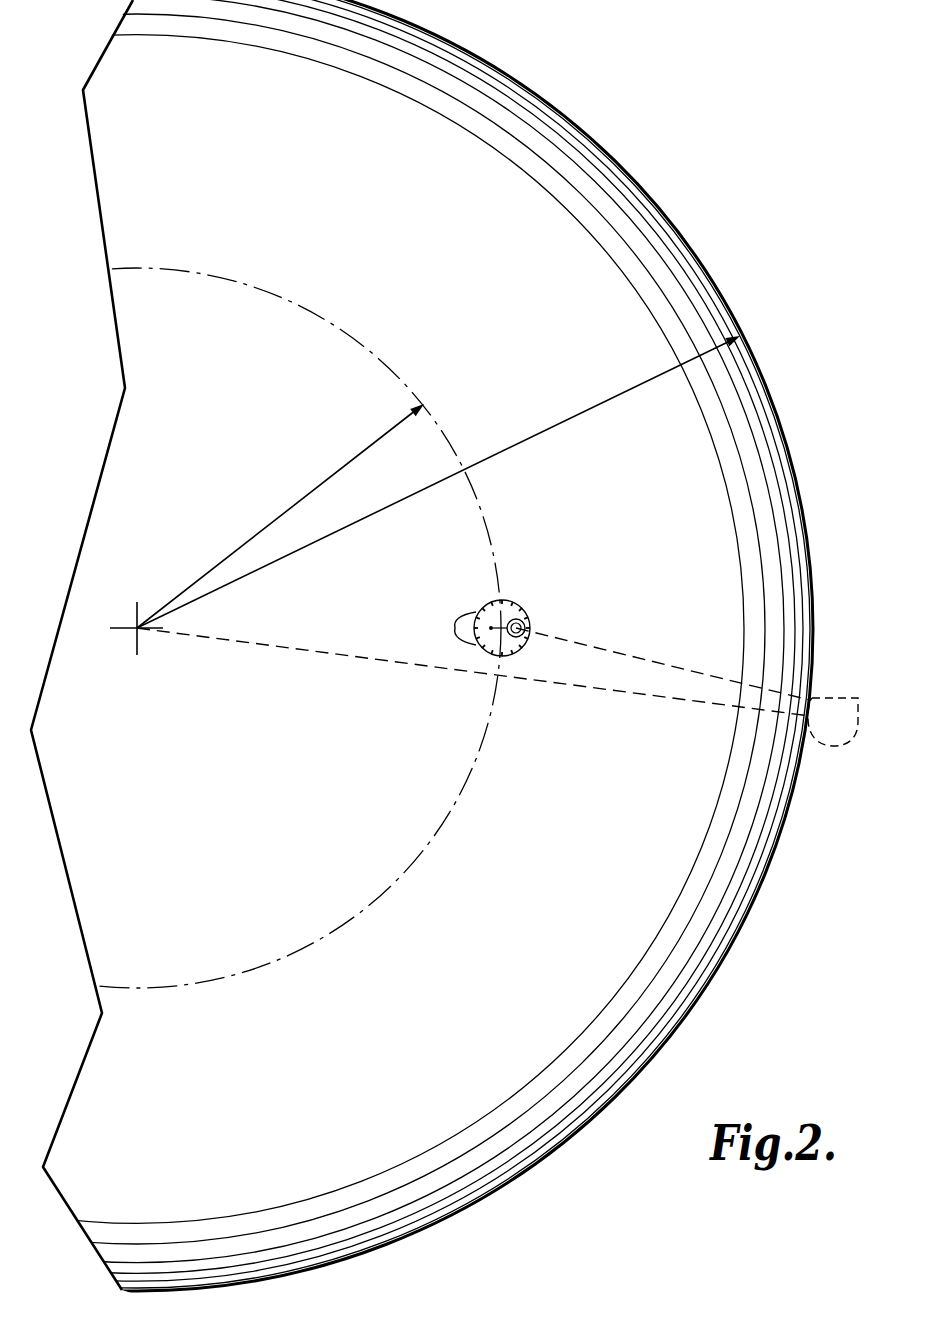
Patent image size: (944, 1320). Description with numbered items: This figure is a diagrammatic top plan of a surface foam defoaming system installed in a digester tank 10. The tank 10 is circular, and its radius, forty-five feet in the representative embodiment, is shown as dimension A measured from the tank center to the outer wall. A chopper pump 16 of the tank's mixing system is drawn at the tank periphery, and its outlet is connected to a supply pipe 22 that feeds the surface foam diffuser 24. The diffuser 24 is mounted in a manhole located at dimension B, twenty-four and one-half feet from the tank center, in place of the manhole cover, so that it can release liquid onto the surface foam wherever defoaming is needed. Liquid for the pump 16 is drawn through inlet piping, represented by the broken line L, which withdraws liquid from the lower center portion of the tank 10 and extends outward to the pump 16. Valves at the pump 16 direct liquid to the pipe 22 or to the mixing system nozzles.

The tank 10 is at (708, 258).
The chopper pump 16 is at (858, 698).
The supply pipe 22 is at (655, 660).
The surface foam diffuser 24 is at (530, 610).
The tank radius dimension A is at (520, 441).
The manhole distance dimension B is at (289, 507).
The inlet piping broken line L is at (277, 647).